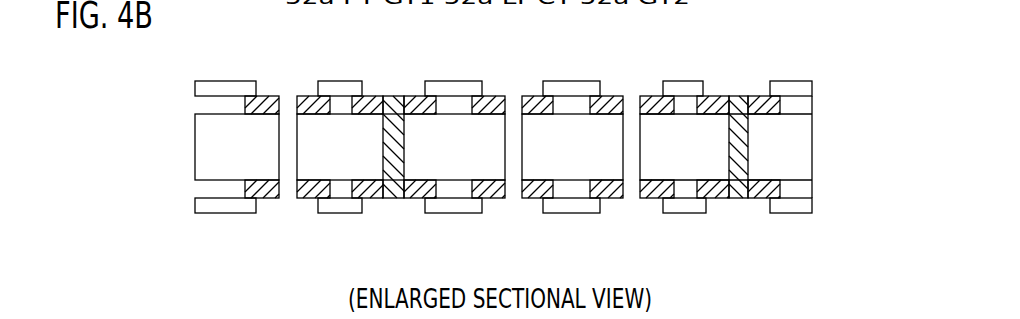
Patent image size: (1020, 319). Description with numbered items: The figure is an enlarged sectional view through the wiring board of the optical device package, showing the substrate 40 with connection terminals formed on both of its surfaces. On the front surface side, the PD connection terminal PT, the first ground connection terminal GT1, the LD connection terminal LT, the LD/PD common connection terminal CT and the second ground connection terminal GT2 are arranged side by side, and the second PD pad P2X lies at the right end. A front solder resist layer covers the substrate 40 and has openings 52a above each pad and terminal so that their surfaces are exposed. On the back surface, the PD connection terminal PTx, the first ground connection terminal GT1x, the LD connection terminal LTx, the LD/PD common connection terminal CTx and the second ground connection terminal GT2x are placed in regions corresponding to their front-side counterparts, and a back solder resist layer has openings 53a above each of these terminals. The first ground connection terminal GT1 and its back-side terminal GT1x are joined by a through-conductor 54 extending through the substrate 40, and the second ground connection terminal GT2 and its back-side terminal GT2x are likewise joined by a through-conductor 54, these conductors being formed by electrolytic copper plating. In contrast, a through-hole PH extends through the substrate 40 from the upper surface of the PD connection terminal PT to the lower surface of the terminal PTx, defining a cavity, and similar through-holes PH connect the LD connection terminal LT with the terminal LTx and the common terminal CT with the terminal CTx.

The PD connection terminal PT is at (306, 93).
The through-hole PH is at (297, 143).
The first ground connection terminal GT1 is at (414, 93).
The through-conductor 54 is at (405, 142).
The opening 52a is at (601, 89).
The LD connection terminal LT is at (532, 93).
The LD/PD common connection terminal CT is at (649, 93).
The second ground connection terminal GT2 is at (758, 94).
The second PD pad P2X is at (818, 110).
The substrate 40 is at (807, 146).
The PD connection terminal PTx is at (312, 197).
The first ground connection terminal GT1x is at (415, 197).
The LD connection terminal LTx is at (532, 197).
The opening 53a is at (603, 199).
The LD/PD common connection terminal CTx is at (651, 197).
The second ground connection terminal GT2x is at (773, 197).